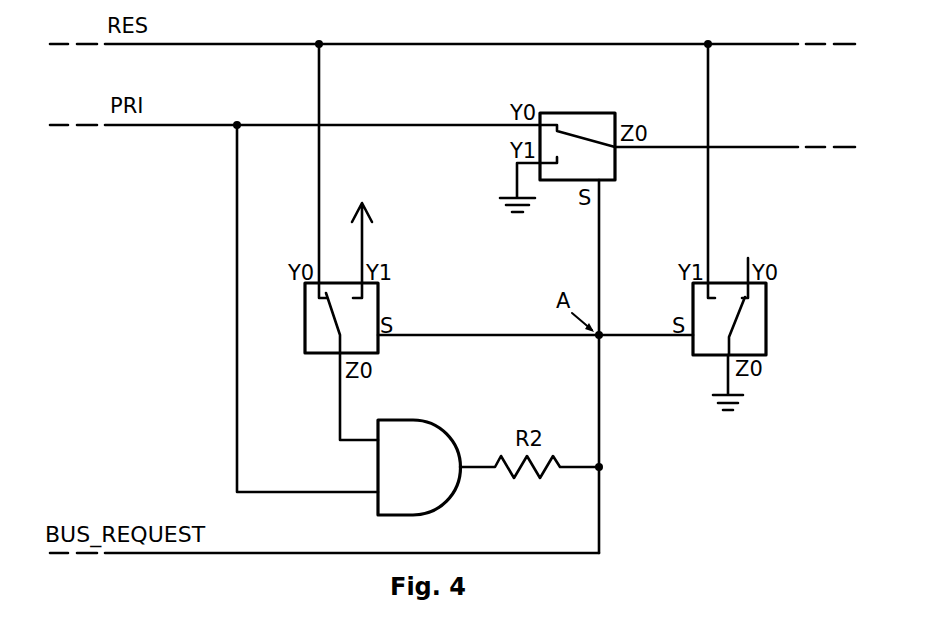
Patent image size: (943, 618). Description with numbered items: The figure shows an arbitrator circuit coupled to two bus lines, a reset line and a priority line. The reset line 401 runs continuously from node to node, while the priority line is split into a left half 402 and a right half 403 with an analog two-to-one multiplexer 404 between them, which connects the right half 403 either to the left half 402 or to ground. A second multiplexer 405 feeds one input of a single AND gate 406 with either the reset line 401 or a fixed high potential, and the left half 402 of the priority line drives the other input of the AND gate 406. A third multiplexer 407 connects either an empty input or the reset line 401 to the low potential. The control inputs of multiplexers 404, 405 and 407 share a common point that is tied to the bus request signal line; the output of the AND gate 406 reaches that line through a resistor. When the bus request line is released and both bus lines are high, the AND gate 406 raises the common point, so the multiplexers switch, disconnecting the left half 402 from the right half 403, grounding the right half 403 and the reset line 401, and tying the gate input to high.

The RES line 401 is at (350, 44).
The left half of PRI line 402 is at (350, 125).
The right half of PRI line 403 is at (732, 147).
The analog two-to-one multiplexer 404 is at (567, 113).
The multiplexer 405 is at (378, 303).
The AND gate 406 is at (400, 420).
The multiplexer 407 is at (766, 303).